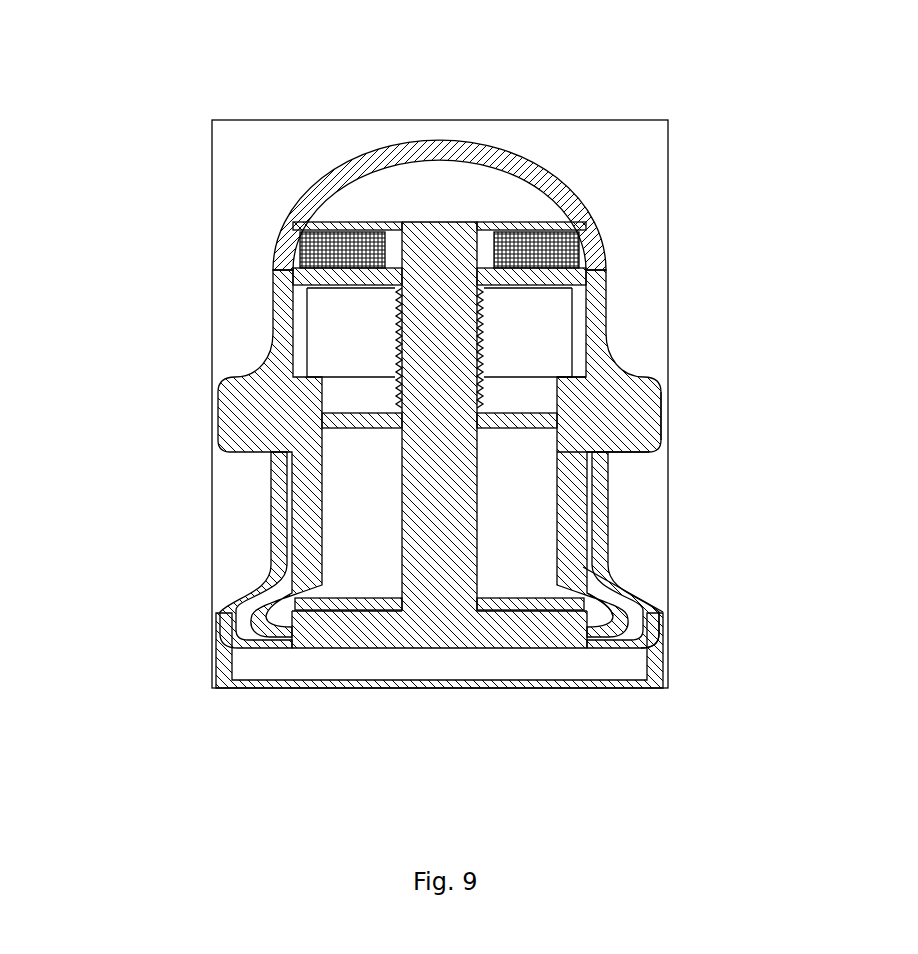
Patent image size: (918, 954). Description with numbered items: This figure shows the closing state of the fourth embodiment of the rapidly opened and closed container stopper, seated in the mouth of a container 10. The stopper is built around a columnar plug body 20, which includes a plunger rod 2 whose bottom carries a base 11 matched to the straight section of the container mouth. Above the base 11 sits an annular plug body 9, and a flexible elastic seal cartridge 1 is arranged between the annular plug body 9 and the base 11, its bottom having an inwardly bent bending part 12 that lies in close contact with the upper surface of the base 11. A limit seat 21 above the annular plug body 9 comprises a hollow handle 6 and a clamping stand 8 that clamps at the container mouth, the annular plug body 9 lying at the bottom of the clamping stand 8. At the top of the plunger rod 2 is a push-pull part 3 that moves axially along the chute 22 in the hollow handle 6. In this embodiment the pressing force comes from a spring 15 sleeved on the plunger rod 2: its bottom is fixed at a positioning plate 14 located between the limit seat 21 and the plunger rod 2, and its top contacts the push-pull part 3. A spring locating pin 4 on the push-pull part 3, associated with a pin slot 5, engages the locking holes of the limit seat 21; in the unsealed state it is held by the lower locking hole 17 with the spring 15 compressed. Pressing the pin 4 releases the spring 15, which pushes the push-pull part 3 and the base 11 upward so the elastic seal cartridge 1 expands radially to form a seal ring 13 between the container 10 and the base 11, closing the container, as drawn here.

The elastic seal cartridge 1 is at (575, 563).
The plunger rod 2 is at (440, 510).
The push-pull part 3 is at (305, 288).
The spring locating pin 4 is at (310, 250).
The pin slot 5 is at (397, 243).
The hollow handle 6 is at (543, 182).
The clamping stand 8 is at (648, 415).
The annular plug body 9 is at (608, 492).
The container 10 is at (225, 658).
The base 11 is at (410, 643).
The bending part 12 is at (553, 607).
The seal ring 13 is at (633, 623).
The positioning plate 14 is at (393, 428).
The spring 15 is at (393, 360).
The lower locking hole 17 is at (593, 325).
The columnar plug body 20 is at (420, 588).
The limit seat 21 is at (610, 375).
The chute 22 is at (577, 295).